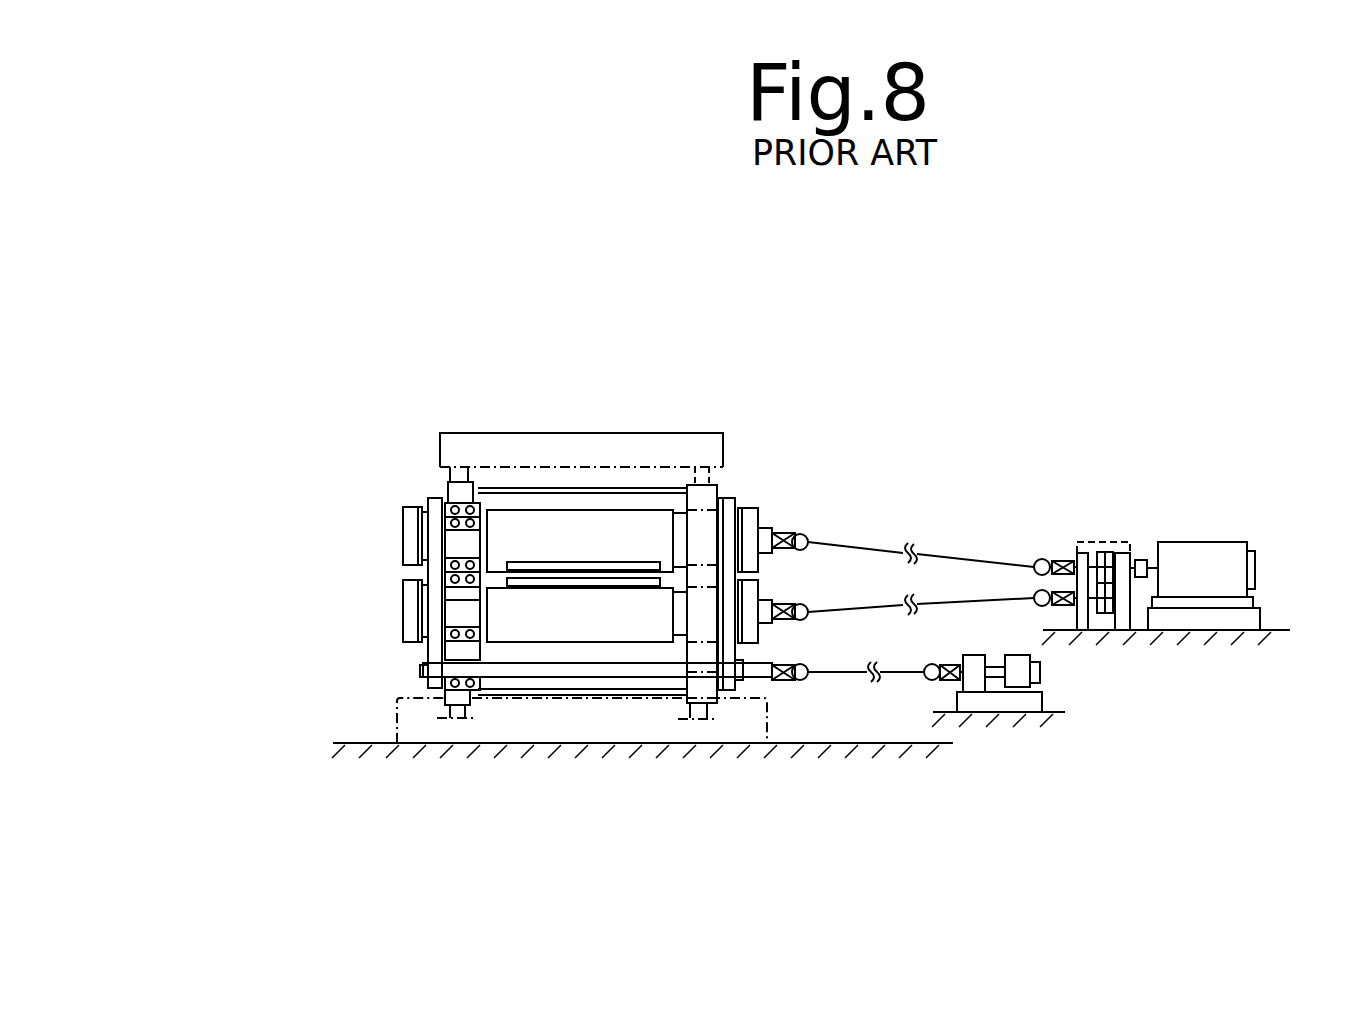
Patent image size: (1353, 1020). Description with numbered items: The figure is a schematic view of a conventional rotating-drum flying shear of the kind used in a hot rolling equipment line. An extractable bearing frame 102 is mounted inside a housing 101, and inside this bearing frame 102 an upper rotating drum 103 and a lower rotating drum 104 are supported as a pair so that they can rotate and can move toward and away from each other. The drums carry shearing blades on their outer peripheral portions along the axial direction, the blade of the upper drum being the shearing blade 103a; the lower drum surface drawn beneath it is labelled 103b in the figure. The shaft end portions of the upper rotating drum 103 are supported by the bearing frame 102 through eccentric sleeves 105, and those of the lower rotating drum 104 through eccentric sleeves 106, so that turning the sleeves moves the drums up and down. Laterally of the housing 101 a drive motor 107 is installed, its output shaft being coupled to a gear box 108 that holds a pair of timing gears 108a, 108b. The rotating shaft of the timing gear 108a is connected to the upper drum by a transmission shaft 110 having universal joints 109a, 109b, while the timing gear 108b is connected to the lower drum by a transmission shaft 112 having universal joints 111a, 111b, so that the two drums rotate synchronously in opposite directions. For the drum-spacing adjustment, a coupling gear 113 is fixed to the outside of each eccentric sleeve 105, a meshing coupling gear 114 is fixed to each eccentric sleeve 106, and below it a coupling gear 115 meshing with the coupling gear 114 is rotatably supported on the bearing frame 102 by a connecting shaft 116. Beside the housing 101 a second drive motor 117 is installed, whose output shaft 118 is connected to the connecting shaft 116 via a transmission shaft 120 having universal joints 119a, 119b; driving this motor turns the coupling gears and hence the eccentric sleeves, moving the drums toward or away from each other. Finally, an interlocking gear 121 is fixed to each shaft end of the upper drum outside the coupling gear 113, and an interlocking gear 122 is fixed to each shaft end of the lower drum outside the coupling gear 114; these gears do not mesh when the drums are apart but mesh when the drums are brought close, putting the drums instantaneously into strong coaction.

The housing 101 is at (510, 432).
The extractable bearing frame 102 is at (447, 503).
The upper rotating drum 103 is at (527, 510).
The shearing blade 103a is at (563, 562).
The lower roll 103b is at (592, 592).
The lower rotating drum 104 is at (622, 618).
The eccentric sleeve 105 is at (470, 500).
The eccentric sleeve 106 is at (468, 637).
The drive motor 107 is at (1229, 542).
The gear box 108 is at (1091, 540).
The timing gear 108a is at (1108, 553).
The timing gear 108b is at (1112, 600).
The universal joint 109a is at (803, 533).
The universal joint 109b is at (1043, 558).
The transmission shaft 110 is at (833, 545).
The universal joint 111a is at (800, 603).
The universal joint 111b is at (1048, 607).
The transmission shaft 112 is at (945, 600).
The coupling gear 113 is at (433, 500).
The coupling gear 114 is at (428, 660).
The coupling gear 115 is at (420, 672).
The connecting shaft 116 is at (572, 667).
The drive motor 117 is at (1020, 675).
The output shaft 118 is at (990, 680).
The universal joint 119a is at (804, 680).
The universal joint 119b is at (935, 680).
The transmission shaft 120 is at (890, 678).
The interlocking gear 121 is at (415, 540).
The interlocking gear 122 is at (410, 622).